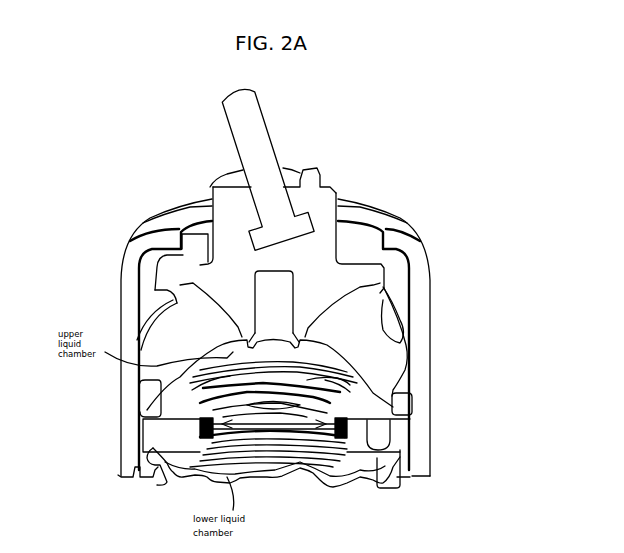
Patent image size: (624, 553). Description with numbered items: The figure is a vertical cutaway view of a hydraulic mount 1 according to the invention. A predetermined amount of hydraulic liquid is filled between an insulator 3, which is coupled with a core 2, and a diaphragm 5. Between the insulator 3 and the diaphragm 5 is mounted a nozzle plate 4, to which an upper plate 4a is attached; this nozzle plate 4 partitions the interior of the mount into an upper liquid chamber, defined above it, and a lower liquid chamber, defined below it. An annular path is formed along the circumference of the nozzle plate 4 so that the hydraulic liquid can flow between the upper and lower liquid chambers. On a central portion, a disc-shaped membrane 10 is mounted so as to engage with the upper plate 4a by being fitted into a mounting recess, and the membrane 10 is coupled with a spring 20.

The outer housing shell 1 is at (274, 343).
The core 2 is at (313, 260).
The insulator 3 is at (367, 337).
The nozzle plate 4 is at (397, 445).
The upper plate 4a is at (400, 400).
The diaphragm 5 is at (357, 483).
The membrane 10 is at (297, 418).
The spring 20 is at (203, 442).